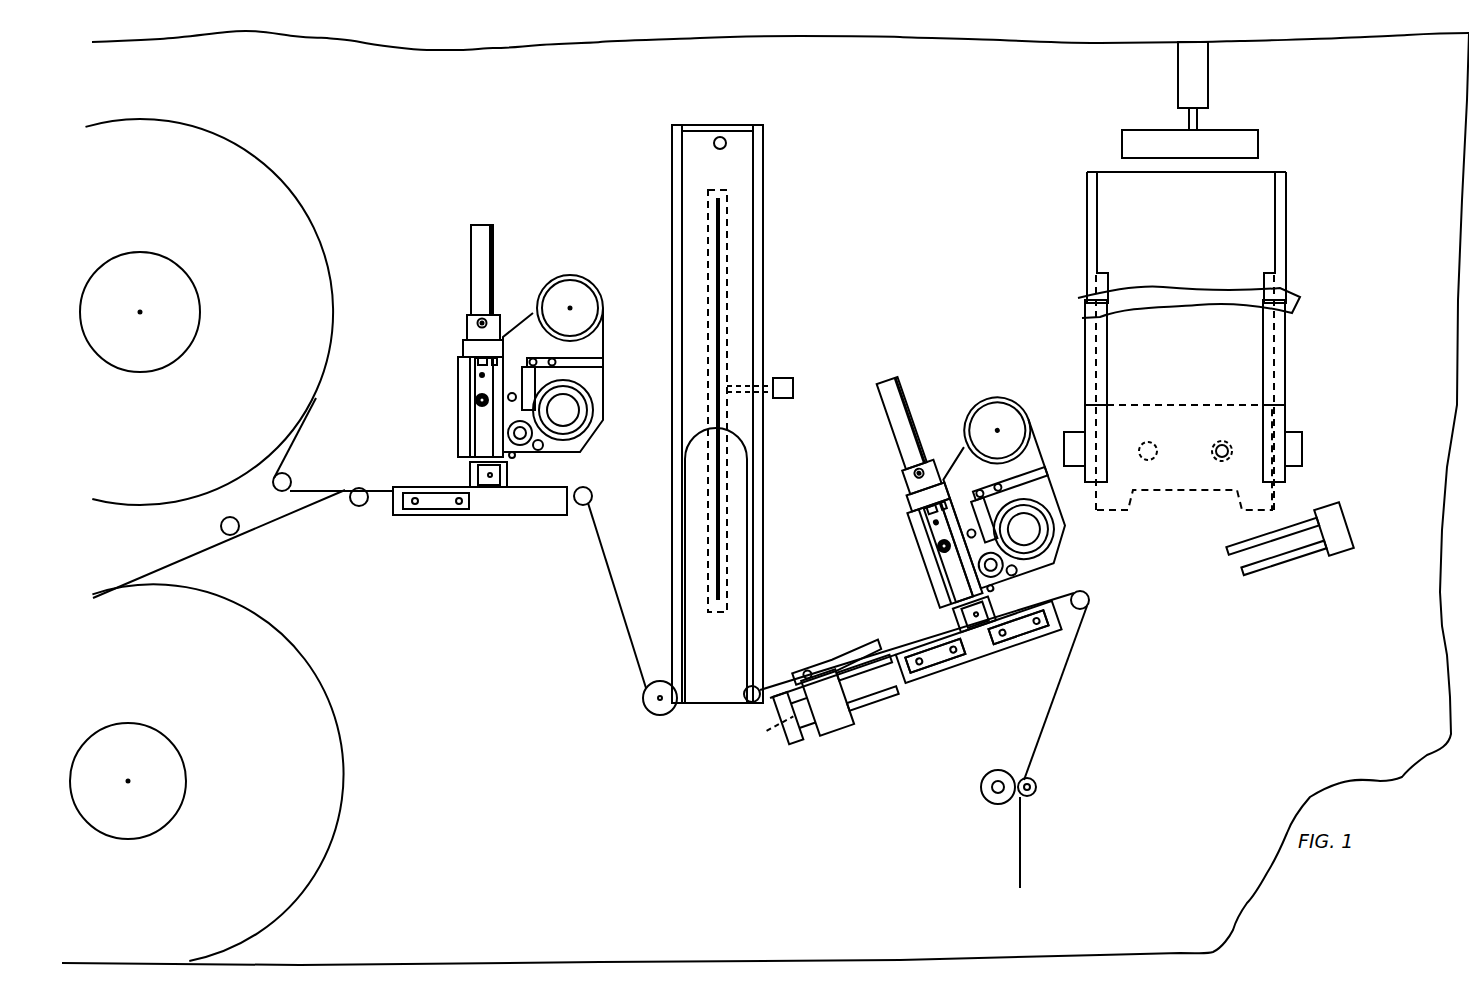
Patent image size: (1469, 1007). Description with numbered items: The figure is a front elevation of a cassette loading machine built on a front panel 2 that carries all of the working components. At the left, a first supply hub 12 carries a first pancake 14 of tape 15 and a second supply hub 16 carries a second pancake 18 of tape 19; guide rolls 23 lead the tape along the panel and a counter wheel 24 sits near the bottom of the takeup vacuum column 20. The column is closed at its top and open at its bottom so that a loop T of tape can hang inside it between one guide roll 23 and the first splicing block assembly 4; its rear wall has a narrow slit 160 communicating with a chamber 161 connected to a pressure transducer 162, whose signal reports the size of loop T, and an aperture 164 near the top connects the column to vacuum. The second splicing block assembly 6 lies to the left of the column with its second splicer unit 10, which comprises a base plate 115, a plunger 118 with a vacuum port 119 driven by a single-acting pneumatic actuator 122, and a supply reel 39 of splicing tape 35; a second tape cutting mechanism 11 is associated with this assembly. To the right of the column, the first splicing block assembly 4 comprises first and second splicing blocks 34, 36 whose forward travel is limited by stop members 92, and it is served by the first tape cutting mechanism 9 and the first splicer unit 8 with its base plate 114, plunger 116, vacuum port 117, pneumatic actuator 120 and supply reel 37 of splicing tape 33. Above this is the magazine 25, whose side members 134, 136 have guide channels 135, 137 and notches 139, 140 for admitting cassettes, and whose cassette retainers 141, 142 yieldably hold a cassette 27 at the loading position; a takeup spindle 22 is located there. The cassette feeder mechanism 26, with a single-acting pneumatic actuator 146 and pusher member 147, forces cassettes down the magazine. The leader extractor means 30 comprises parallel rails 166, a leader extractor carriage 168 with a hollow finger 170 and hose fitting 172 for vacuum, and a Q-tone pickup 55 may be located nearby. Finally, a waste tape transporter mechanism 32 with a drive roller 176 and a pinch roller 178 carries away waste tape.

The front panel 2 is at (457, 83).
The first splicing block assembly 4 is at (930, 690).
The second splicing block assembly 6 is at (438, 521).
The first splicer unit 8 is at (977, 496).
The first tape cutting mechanism 9 is at (952, 618).
The second splicer unit 10 is at (520, 353).
The second tape cutting mechanism 11 is at (463, 472).
The first supply hub 12 is at (185, 280).
The first pancake 14 is at (245, 168).
The tape 15 is at (286, 456).
The second supply hub 16 is at (158, 735).
The second pancake 18 is at (295, 732).
The tape 19 is at (145, 561).
The takeup vacuum column 20 is at (668, 150).
The takeup spindle 22 is at (1221, 448).
The guide rolls 23 is at (288, 474).
The counter wheel 24 is at (643, 691).
The magazine 25 is at (1185, 374).
The cassette feeder mechanism 26 is at (1163, 100).
The cassette 27 is at (1160, 576).
The leader extractor means 30 is at (816, 690).
The waste tape transporter mechanism 32 is at (1011, 801).
The splicing tape 33 is at (968, 470).
The first splicing block 34 is at (1046, 641).
The splicing tape 35 is at (565, 360).
The second splicing block 36 is at (942, 668).
The supply reel 37 is at (988, 412).
The supply reel 39 is at (576, 290).
The Q-tone pickup 55 is at (790, 718).
The stop members 92 is at (451, 508).
The base plate 114 is at (1060, 545).
The base plate 115 is at (604, 346).
The plunger 116 is at (936, 540).
The vacuum port 117 is at (937, 556).
The plunger 118 is at (478, 380).
The vacuum port 119 is at (480, 402).
The single-acting pneumatic actuator 120 is at (895, 394).
The single-acting pneumatic actuator 122 is at (494, 246).
The side member 134 is at (1210, 302).
The guide channel 135 is at (1282, 336).
The side member 136 is at (1079, 298).
The guide channel 137 is at (1090, 324).
The notch 139 is at (1270, 238).
The notch 140 is at (1098, 233).
The cassette retainer 141 is at (1294, 432).
The cassette retainer 142 is at (1073, 432).
The single-acting pneumatic actuator 146 is at (1209, 88).
The pusher member 147 is at (1232, 131).
The slit 160 is at (722, 233).
The chamber 161 is at (728, 330).
The pressure transducer 162 is at (780, 379).
The aperture 164 is at (722, 138).
The rails 166 is at (1296, 550).
The leader extractor carriage 168 is at (832, 716).
The hollow finger 170 is at (845, 662).
The hose fitting 172 is at (816, 667).
The drive roller 176 is at (1030, 806).
The pinch roller 178 is at (980, 779).
The loop of tape T is at (740, 432).